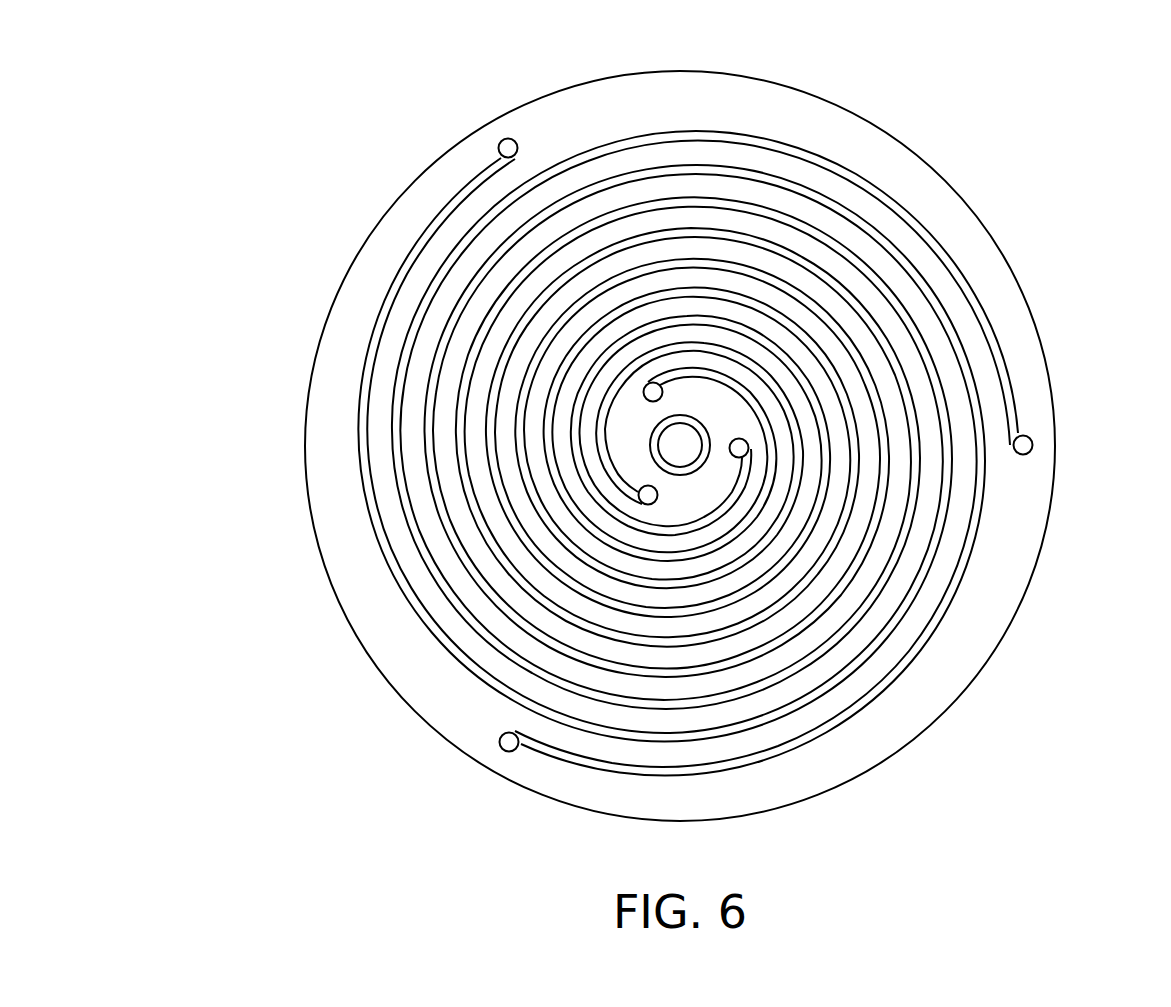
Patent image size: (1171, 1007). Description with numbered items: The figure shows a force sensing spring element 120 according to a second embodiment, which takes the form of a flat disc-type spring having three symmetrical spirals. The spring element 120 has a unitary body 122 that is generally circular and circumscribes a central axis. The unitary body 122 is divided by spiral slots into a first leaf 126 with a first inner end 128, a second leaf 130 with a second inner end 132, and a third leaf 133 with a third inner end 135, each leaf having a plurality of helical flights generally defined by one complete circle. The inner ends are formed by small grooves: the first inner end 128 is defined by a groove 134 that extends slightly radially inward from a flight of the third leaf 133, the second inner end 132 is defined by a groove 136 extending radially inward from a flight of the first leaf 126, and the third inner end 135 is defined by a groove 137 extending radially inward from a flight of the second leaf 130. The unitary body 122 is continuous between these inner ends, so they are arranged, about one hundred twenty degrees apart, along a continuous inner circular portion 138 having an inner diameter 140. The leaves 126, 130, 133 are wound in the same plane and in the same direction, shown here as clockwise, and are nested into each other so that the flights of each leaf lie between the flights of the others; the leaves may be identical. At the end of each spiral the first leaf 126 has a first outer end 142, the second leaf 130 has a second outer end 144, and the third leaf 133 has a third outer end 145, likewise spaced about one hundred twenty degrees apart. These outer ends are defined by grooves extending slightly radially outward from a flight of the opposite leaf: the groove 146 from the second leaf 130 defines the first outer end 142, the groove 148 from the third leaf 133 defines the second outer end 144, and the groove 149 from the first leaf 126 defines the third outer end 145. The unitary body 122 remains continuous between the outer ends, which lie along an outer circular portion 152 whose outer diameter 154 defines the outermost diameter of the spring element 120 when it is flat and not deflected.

The force sensing spring element 120 is at (322, 166).
The unitary body 122 is at (368, 257).
The first leaf 126 is at (668, 357).
The first inner end 128 is at (626, 501).
The second leaf 130 is at (774, 457).
The second inner end 132 is at (582, 394).
The third leaf 133 is at (638, 348).
The groove 134 is at (648, 500).
The third inner end 135 is at (718, 450).
The groove 136 is at (645, 395).
The groove 137 is at (737, 448).
The inner circular portion 138 is at (715, 402).
The inner diameter 140 is at (625, 435).
The first outer end 142 is at (432, 186).
The second outer end 144 is at (1035, 413).
The third outer end 145 is at (568, 785).
The groove 146 is at (506, 150).
The groove 148 is at (1022, 447).
The groove 149 is at (510, 748).
The outer circular portion 152 is at (630, 100).
The outer diameter 154 is at (828, 790).